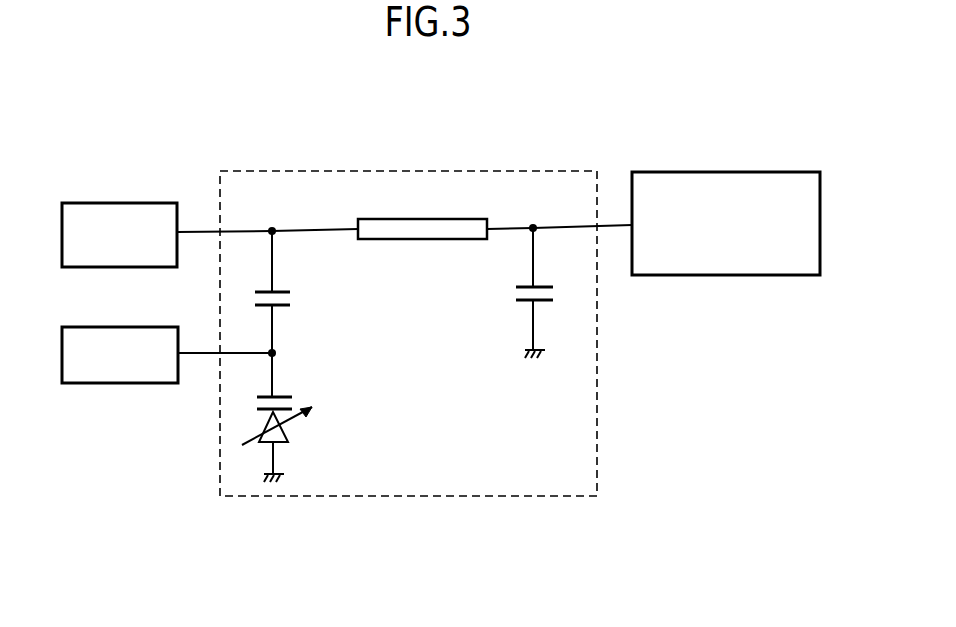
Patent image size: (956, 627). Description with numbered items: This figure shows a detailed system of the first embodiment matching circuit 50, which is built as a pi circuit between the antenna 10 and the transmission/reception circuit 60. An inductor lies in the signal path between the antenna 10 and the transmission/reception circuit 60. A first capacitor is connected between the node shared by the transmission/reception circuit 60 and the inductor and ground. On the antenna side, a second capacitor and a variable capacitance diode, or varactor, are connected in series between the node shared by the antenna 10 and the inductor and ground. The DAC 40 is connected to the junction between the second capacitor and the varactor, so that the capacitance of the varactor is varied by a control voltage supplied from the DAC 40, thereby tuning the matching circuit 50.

The antenna 10 is at (126, 210).
The DAC 40 is at (129, 377).
The matching circuit 50 is at (597, 365).
The transmission/reception circuit 60 is at (693, 175).